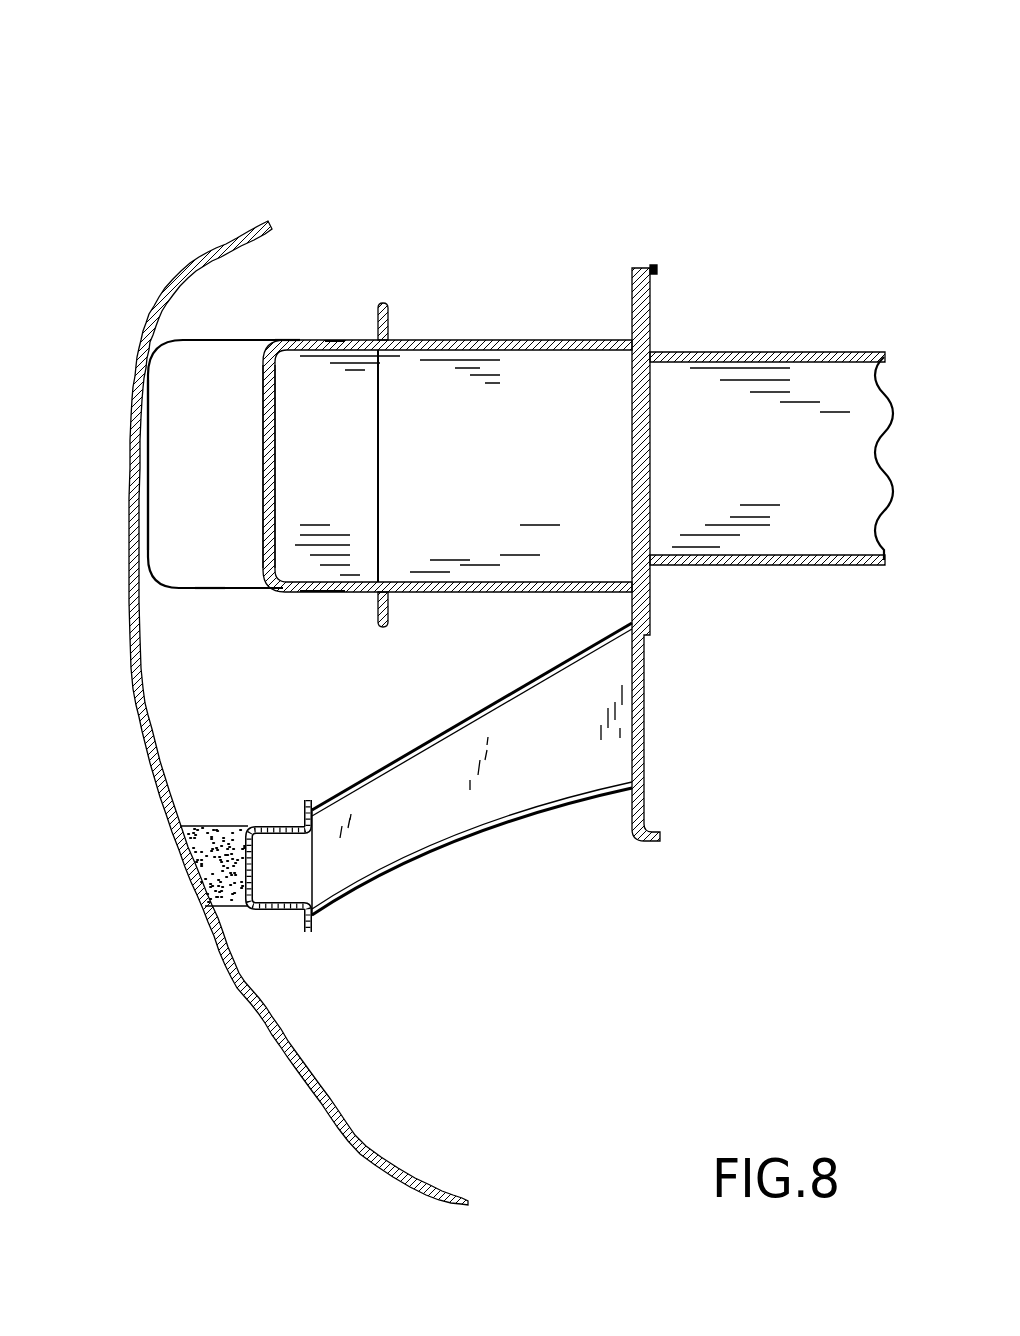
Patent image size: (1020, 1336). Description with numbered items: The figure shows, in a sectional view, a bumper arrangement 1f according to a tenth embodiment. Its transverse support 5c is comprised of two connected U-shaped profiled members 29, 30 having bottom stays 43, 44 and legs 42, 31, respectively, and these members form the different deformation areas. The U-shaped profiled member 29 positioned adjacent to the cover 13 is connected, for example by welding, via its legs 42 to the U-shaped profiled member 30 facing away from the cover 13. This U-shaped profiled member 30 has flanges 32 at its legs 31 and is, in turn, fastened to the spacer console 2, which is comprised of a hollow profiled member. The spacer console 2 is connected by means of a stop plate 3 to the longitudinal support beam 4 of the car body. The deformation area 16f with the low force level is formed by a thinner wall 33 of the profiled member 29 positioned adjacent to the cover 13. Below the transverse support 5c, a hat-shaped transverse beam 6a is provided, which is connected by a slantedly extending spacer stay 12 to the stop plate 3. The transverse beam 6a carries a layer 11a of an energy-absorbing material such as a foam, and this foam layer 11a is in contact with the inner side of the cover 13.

The bumper arrangement 1f is at (256, 125).
The spacer console 2 is at (545, 338).
The stop plate 3 is at (650, 436).
The longitudinal support beam 4 is at (790, 352).
The transverse support 5c is at (298, 318).
The transverse beam 6a is at (296, 926).
The foam layer 11a is at (203, 862).
The spacer stay 12 is at (528, 796).
The cover 13 is at (133, 668).
The deformation area 16f is at (264, 484).
The U-shaped profiled member 29 is at (207, 594).
The U-shaped profiled member 30 is at (316, 596).
The leg 31 is at (333, 340).
The flange 32 is at (390, 314).
The thinner wall 33 is at (212, 340).
The leg 42 is at (240, 590).
The bottom stay 43 is at (128, 536).
The bottom stay 44 is at (283, 430).